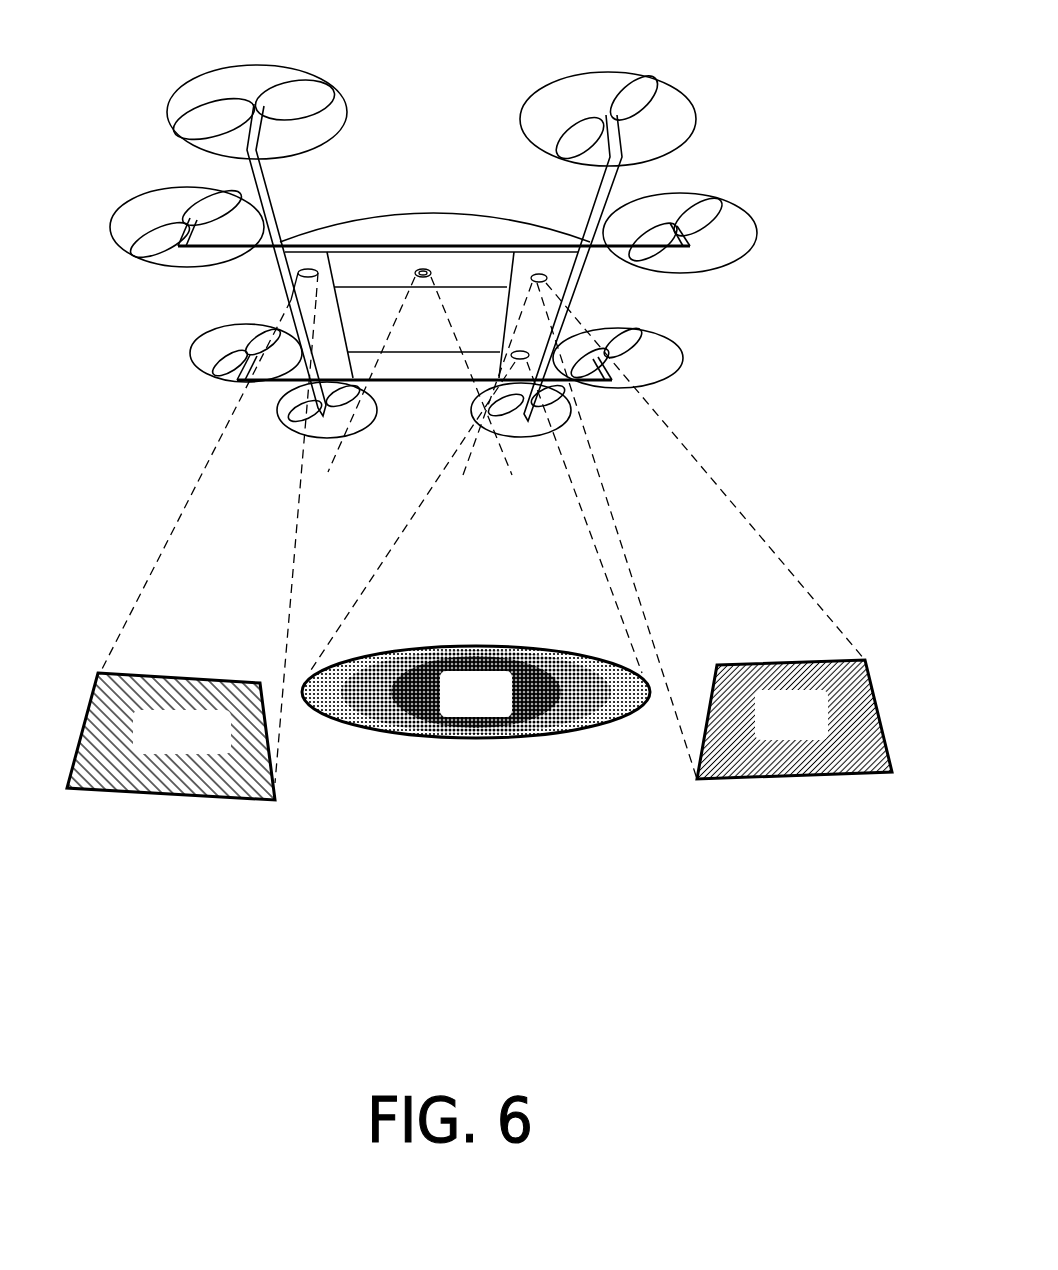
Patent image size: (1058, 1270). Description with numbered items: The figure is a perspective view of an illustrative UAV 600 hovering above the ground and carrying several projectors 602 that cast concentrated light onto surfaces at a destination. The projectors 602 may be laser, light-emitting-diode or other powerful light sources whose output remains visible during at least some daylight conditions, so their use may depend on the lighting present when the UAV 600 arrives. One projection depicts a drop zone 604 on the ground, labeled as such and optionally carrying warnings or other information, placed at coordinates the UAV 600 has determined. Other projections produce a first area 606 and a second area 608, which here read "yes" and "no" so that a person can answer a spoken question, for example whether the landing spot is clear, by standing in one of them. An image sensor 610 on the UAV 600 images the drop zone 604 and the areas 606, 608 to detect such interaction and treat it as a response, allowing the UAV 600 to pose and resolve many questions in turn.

The UAV 600 is at (731, 34).
The projectors 602 is at (312, 270).
The drop zone (DZ) 604 is at (477, 741).
The first area 606 is at (197, 800).
The second area 608 is at (773, 779).
The image sensor 610 is at (423, 268).